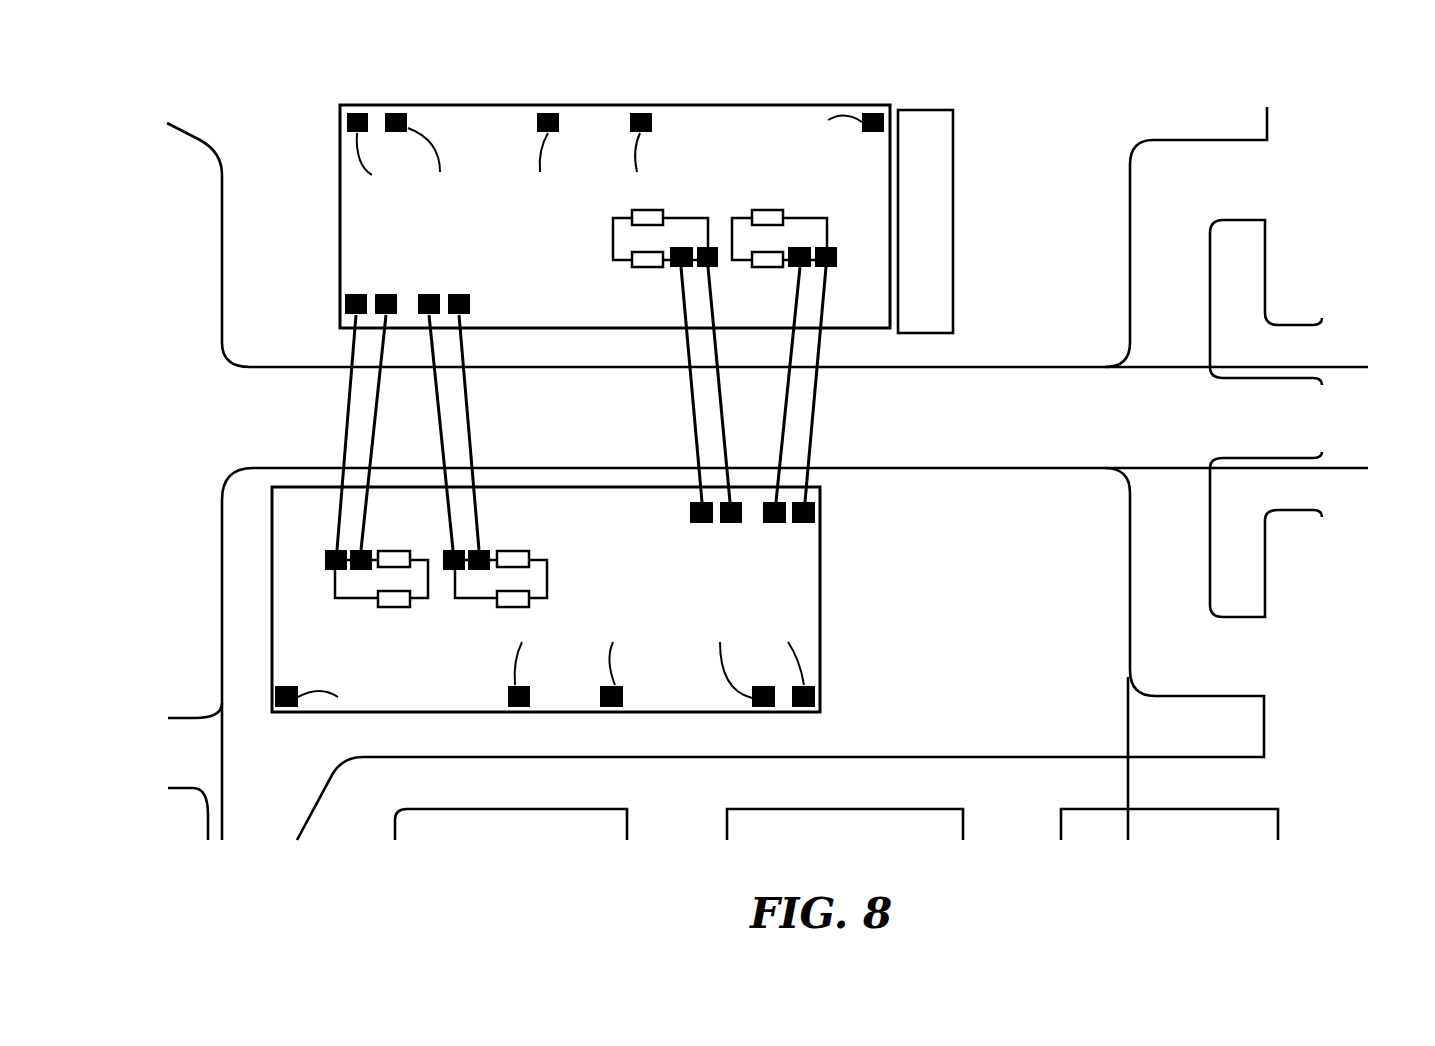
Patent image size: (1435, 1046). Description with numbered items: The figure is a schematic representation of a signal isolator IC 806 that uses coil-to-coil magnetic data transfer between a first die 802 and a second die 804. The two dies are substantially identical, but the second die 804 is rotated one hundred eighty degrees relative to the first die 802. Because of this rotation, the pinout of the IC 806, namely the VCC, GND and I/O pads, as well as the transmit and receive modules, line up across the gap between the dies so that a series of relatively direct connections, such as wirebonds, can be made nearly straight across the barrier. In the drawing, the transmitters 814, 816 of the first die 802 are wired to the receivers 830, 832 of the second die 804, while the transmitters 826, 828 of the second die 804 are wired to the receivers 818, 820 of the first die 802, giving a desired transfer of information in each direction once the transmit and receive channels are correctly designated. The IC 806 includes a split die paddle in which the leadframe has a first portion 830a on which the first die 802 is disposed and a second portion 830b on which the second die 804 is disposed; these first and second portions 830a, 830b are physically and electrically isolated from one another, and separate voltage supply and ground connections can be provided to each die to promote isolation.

The first die 802 is at (700, 105).
The second die 804 is at (820, 630).
The signal isolator IC 806 is at (767, 237).
The transmitter 814 is at (372, 290).
The transmitter 816 is at (443, 290).
The receiver 818 is at (613, 235).
The receiver 820 is at (828, 240).
The transmitter 826 is at (716, 527).
The transmitter 828 is at (790, 527).
The receiver 830 is at (333, 572).
The receiver 832 is at (548, 578).
The first portion of the leadframe 830a is at (1163, 302).
The second portion of the leadframe 830b is at (768, 646).